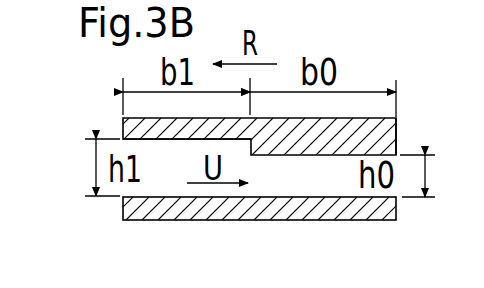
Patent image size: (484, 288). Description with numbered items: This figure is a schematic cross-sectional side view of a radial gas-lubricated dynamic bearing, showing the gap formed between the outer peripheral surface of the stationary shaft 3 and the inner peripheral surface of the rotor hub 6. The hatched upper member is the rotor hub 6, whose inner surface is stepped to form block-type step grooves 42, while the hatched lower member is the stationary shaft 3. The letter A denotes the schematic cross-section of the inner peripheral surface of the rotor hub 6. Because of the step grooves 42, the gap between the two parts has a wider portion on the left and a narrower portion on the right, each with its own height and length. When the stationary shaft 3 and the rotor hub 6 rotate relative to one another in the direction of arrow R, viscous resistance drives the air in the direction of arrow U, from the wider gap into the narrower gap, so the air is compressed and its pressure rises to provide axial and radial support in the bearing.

The rotor hub 6 is at (378, 123).
The stationary shaft 3 is at (344, 208).
The step grooves 42 is at (169, 146).
The schematic cross-section of the inner peripheral surface of the rotor hub A is at (404, 139).